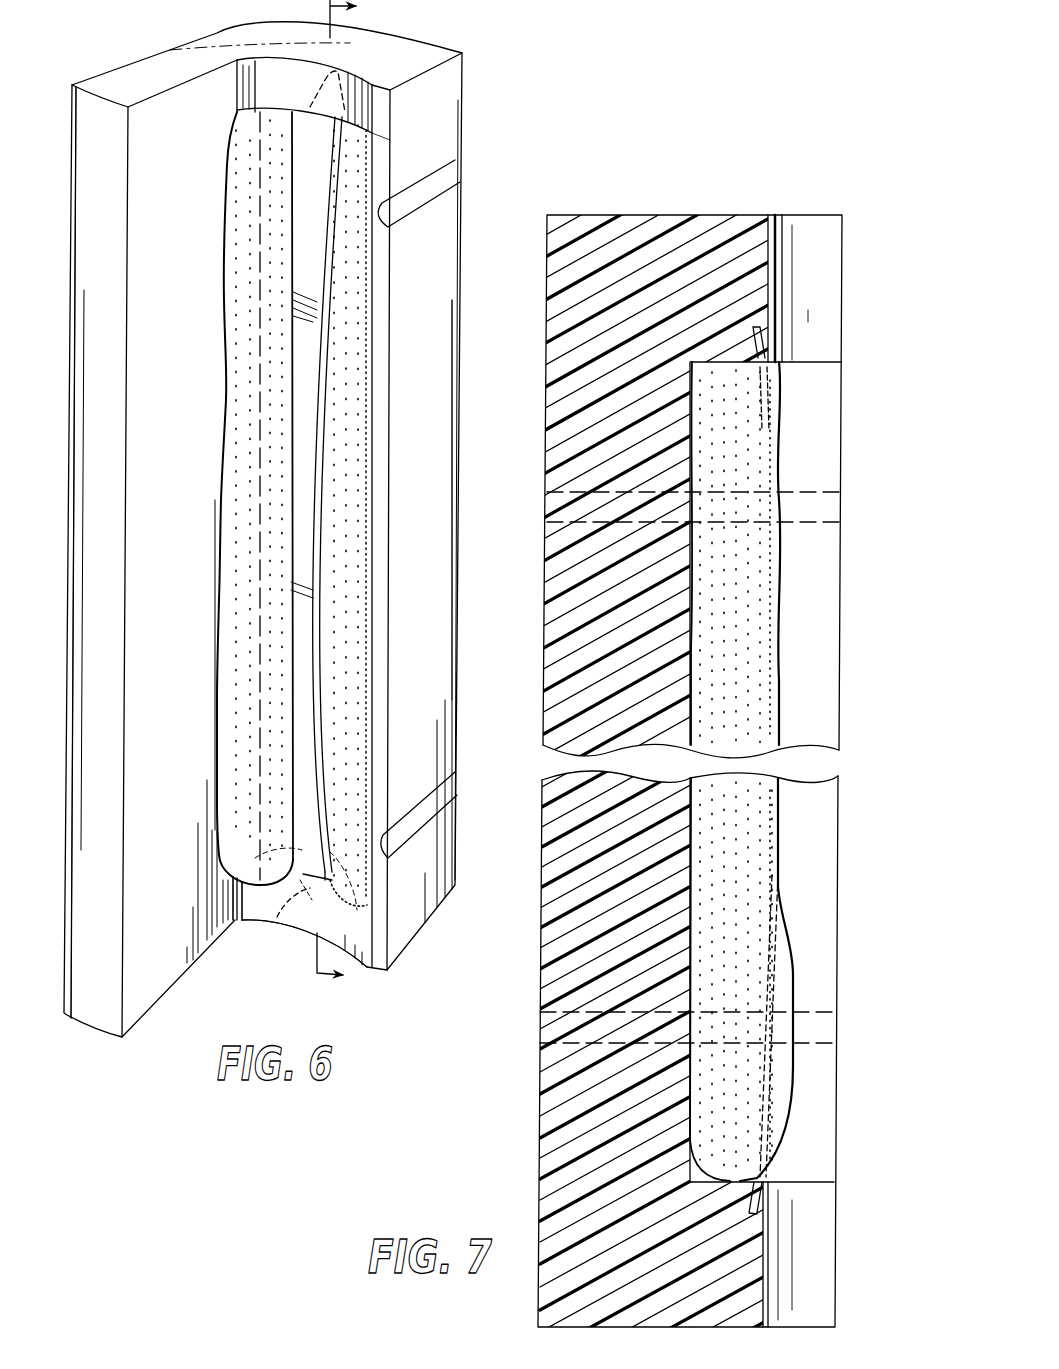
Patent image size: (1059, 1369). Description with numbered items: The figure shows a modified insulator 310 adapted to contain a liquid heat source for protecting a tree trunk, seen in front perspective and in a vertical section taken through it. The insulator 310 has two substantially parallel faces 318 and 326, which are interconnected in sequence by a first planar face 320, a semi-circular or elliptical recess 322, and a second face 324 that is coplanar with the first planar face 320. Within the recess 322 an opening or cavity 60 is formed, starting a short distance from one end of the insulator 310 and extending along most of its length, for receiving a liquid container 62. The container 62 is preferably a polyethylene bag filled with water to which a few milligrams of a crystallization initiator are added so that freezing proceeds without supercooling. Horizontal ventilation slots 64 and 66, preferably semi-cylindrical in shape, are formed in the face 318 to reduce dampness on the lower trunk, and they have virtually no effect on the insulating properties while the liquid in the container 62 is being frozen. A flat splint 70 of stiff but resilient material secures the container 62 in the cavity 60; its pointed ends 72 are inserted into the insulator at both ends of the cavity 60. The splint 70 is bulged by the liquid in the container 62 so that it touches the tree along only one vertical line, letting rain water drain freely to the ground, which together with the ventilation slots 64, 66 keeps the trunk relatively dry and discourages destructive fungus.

In FIG. 6, the insulator 310 is at (175, 1089).
In FIG. 7, the insulator 310 is at (500, 1149).
In FIG. 6, the face 318 is at (434, 431).
In FIG. 6, the first planar face 320 is at (383, 133).
In FIG. 7, the first planar face 320 is at (843, 346).
In FIG. 6, the recess 322 is at (293, 922).
In FIG. 7, the recess 322 is at (765, 1308).
In FIG. 6, the second face 324 is at (234, 925).
In FIG. 6, the face 326 is at (138, 526).
In FIG. 6, the cavity 60 is at (279, 414).
In FIG. 7, the cavity 60 is at (801, 663).
In FIG. 6, the liquid container 62 is at (331, 696).
In FIG. 7, the liquid container 62 is at (716, 706).
In FIG. 6, the ventilation slot 64 is at (438, 177).
In FIG. 7, the ventilation slot 64 is at (846, 497).
In FIG. 6, the ventilation slot 66 is at (450, 772).
In FIG. 7, the ventilation slot 66 is at (835, 1031).
In FIG. 6, the splint 70 is at (286, 645).
In FIG. 7, the splint 70 is at (778, 854).
In FIG. 6, the pointed ends 72 is at (284, 928).